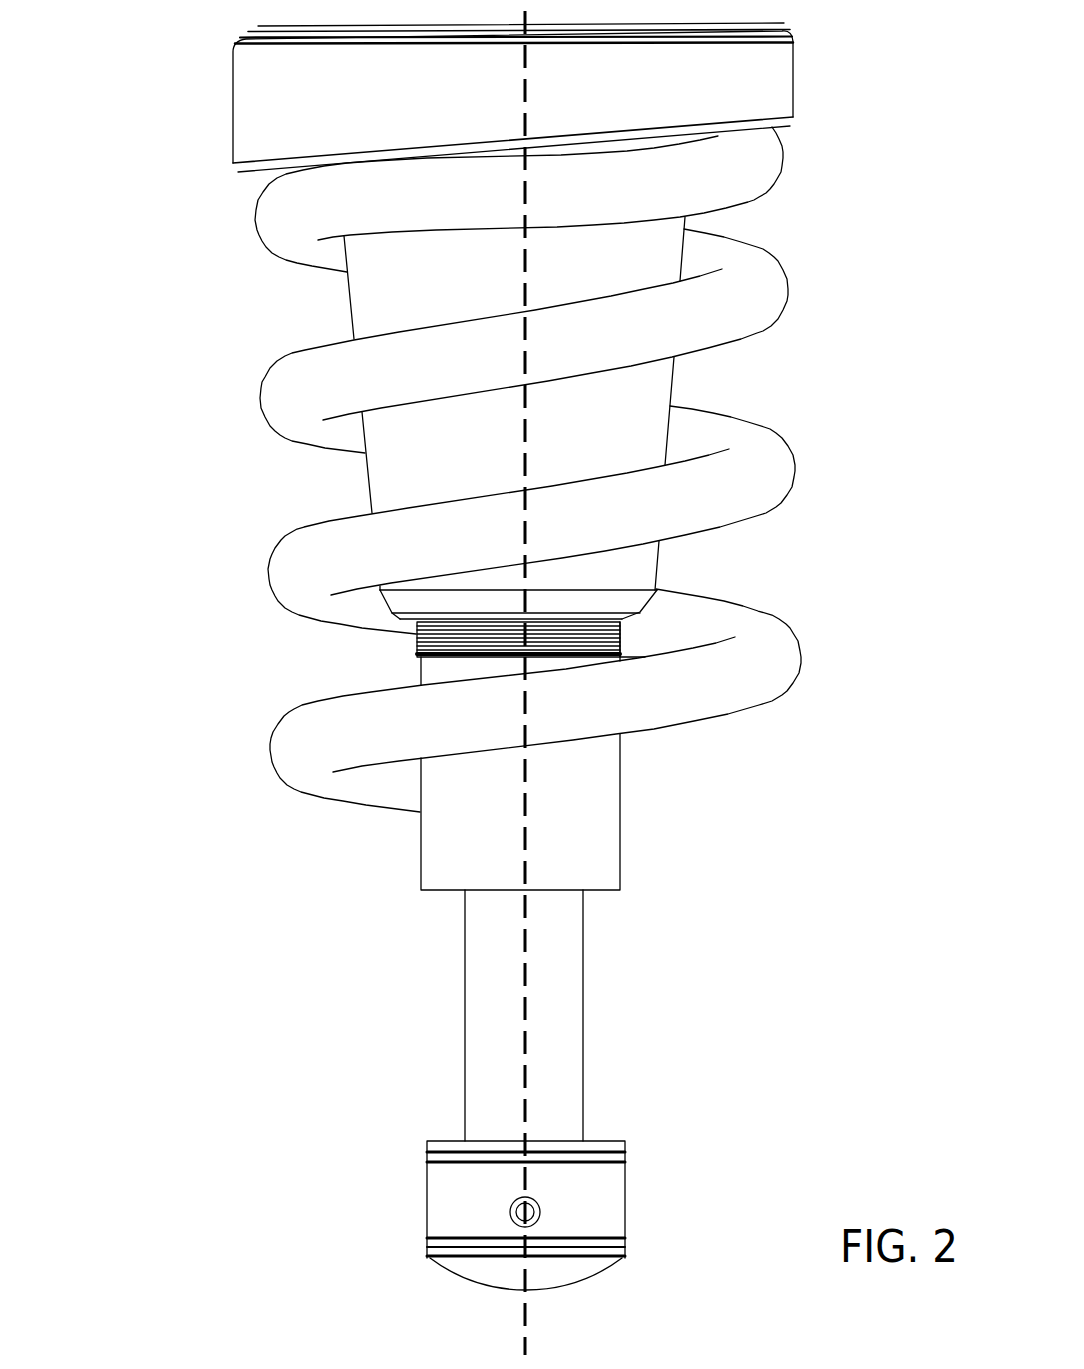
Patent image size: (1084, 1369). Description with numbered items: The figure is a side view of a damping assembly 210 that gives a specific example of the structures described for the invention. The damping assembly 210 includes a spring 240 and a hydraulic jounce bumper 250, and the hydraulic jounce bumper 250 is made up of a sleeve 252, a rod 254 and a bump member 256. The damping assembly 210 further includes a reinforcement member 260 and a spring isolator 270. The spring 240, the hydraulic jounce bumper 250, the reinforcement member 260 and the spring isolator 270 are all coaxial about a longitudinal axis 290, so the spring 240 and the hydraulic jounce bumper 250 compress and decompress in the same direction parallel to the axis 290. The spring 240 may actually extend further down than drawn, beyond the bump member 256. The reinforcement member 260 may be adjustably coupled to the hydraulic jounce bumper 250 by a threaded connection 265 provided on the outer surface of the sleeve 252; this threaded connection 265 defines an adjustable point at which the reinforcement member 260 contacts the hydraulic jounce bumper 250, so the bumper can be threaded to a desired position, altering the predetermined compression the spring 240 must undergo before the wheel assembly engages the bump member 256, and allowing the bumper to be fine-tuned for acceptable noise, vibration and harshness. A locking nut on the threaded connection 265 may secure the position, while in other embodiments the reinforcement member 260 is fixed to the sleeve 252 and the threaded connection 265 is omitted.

The damping assembly 210 is at (479, 677).
The spring 240 is at (740, 479).
The hydraulic jounce bumper 250 is at (660, 956).
The sleeve 252 is at (587, 821).
The rod 254 is at (563, 977).
The bump member 256 is at (580, 1190).
The reinforcement member 260 is at (587, 427).
The threaded connection 265 is at (417, 637).
The spring isolator 270 is at (748, 77).
The longitudinal axis 290 is at (525, 1072).